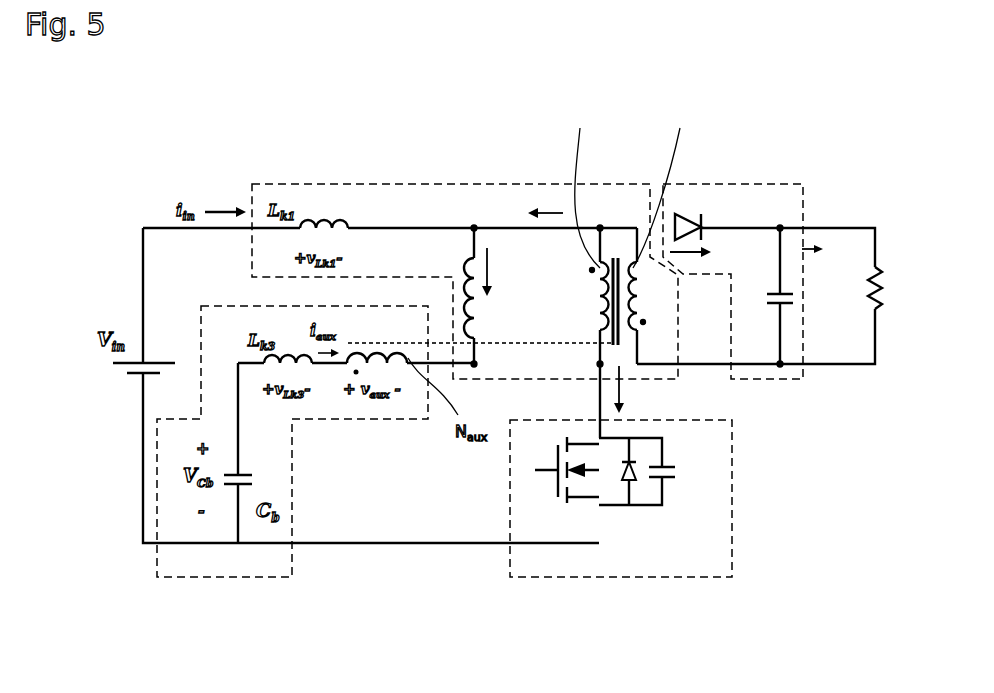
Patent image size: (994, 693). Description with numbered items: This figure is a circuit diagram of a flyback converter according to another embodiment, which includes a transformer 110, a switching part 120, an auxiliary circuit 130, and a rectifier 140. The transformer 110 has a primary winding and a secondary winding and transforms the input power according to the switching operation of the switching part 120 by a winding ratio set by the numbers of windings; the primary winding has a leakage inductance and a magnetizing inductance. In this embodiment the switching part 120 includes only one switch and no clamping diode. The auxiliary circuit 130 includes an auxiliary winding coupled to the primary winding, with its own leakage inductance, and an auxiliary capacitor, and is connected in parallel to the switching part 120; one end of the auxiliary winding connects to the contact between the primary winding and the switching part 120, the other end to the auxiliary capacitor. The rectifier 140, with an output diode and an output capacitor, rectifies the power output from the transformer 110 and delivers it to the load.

The transformer 110 is at (372, 184).
The switching part 120 is at (640, 577).
The auxiliary circuit 130 is at (240, 577).
The rectifier 140 is at (775, 184).